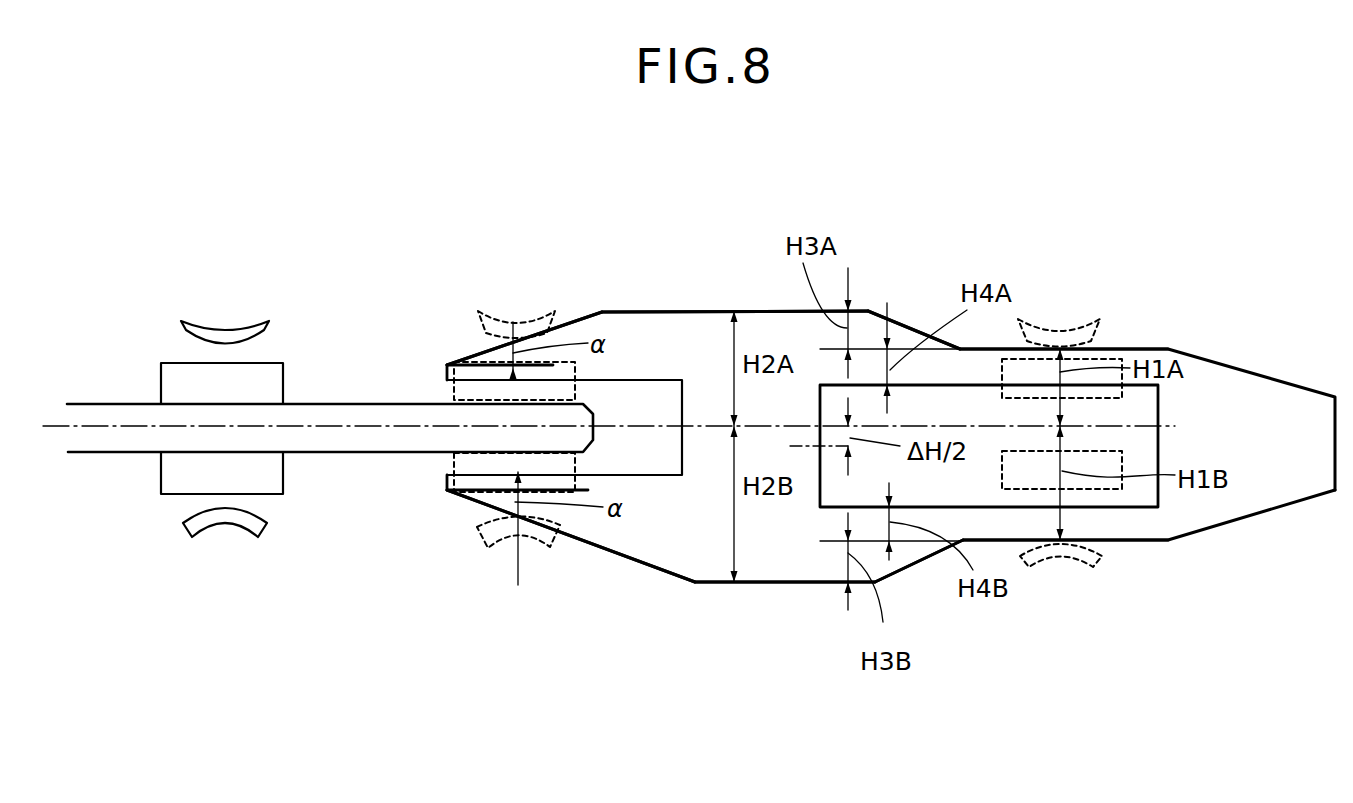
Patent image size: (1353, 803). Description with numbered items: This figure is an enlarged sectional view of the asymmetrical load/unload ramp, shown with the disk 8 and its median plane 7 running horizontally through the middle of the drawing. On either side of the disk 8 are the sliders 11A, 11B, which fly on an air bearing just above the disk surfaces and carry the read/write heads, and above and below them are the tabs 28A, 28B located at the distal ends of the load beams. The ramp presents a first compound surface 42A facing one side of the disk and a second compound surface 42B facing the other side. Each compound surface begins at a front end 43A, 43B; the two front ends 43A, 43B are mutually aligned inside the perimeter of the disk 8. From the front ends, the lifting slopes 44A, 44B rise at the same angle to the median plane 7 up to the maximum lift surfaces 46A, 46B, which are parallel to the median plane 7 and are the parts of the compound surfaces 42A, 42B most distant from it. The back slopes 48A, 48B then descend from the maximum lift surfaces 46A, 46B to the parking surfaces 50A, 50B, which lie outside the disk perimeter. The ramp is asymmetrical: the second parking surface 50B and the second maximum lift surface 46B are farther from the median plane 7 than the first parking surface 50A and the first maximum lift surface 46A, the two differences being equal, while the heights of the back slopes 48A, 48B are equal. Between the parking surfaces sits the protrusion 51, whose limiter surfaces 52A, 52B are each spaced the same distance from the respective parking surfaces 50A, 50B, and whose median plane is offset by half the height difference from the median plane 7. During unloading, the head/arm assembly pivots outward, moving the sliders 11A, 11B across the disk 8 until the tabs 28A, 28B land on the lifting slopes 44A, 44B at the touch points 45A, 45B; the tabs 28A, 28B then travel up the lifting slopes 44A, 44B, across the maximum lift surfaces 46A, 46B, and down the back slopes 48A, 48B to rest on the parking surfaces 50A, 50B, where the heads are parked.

The median plane 7 is at (348, 426).
The disk 8 is at (108, 413).
The slider 11A is at (183, 374).
The slider 11B is at (183, 485).
The tab 28A is at (224, 333).
The tab 28B is at (225, 517).
The first compound surface 42A is at (732, 258).
The second compound surface 42B is at (714, 588).
The front end 43A is at (446, 372).
The front end 43B is at (446, 482).
The lifting slope 44A is at (582, 317).
The lifting slope 44B is at (650, 567).
The touch point 45A is at (512, 343).
The touch point 45B is at (505, 532).
The maximum lift surface 46A is at (663, 310).
The maximum lift surface 46B is at (775, 583).
The back slope 48A is at (913, 328).
The back slope 48B is at (903, 558).
The parking surface 50A is at (1123, 348).
The parking surface 50B is at (1032, 542).
The protrusion 51 is at (1143, 449).
The limiter surface 52A is at (1018, 382).
The limiter surface 52B is at (1110, 507).